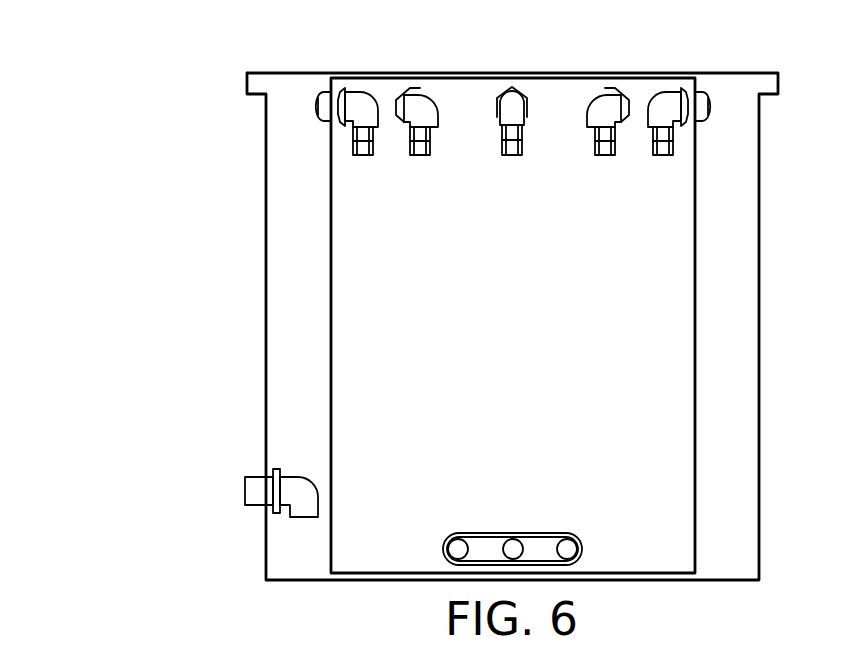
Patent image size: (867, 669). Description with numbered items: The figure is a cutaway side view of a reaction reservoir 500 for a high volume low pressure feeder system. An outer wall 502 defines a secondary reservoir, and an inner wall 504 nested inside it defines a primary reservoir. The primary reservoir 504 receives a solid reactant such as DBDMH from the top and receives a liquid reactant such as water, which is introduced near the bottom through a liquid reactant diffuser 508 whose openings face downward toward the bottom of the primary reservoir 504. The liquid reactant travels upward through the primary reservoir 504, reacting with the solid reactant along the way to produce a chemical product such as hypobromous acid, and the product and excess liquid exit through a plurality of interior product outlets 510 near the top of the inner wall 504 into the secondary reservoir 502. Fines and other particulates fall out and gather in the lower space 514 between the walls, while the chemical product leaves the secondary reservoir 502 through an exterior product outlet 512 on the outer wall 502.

The reaction reservoir 500 is at (132, 56).
The outer wall 502 is at (266, 258).
The inner wall 504 is at (697, 258).
The liquid reactant diffuser 508 is at (445, 548).
The interior product outlets 510 is at (500, 112).
The exterior product outlet 512 is at (245, 483).
The space for fines 514 is at (296, 563).